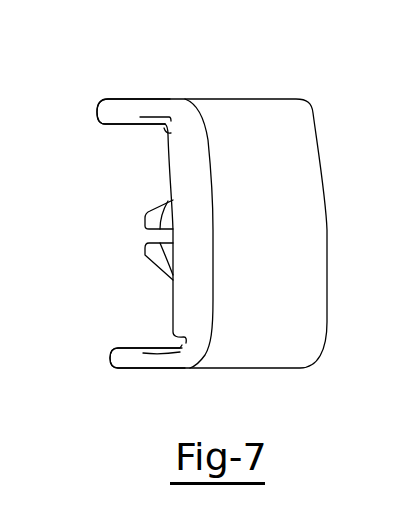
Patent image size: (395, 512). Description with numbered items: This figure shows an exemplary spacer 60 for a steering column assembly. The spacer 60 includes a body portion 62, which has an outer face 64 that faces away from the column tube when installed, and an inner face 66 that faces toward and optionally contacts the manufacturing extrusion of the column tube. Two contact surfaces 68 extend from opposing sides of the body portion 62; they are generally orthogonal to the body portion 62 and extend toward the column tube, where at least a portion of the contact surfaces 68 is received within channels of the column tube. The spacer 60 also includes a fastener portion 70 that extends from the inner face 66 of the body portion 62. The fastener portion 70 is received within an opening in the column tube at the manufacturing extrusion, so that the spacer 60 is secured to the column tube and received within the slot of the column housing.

The spacer 60 is at (147, 50).
The body portion 62 is at (333, 216).
The outer face 64 is at (247, 147).
The inner face 66 is at (171, 169).
The contact surfaces 68 is at (118, 110).
The fastener portion 70 is at (149, 258).